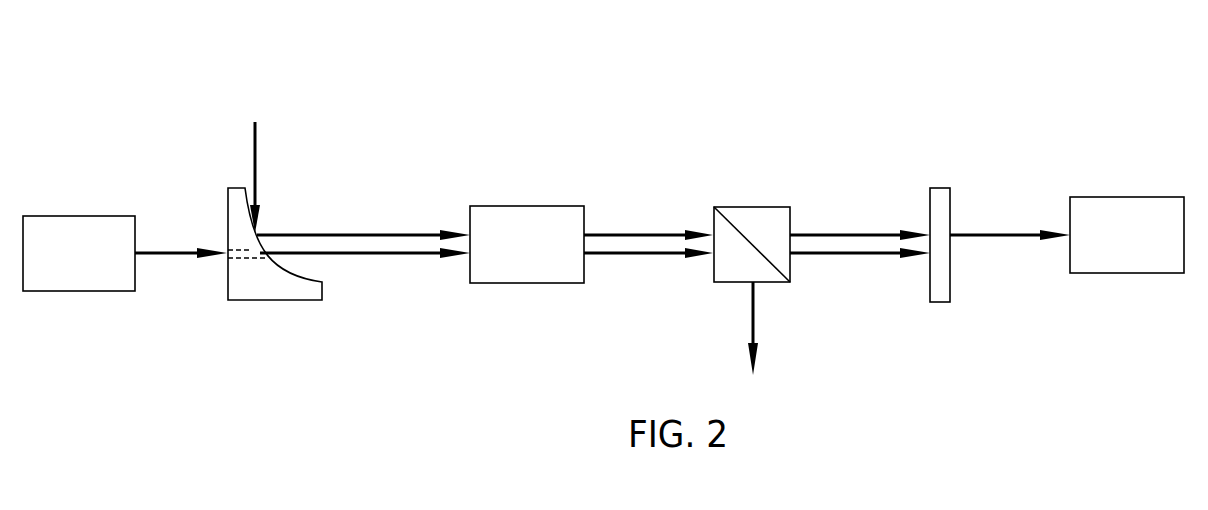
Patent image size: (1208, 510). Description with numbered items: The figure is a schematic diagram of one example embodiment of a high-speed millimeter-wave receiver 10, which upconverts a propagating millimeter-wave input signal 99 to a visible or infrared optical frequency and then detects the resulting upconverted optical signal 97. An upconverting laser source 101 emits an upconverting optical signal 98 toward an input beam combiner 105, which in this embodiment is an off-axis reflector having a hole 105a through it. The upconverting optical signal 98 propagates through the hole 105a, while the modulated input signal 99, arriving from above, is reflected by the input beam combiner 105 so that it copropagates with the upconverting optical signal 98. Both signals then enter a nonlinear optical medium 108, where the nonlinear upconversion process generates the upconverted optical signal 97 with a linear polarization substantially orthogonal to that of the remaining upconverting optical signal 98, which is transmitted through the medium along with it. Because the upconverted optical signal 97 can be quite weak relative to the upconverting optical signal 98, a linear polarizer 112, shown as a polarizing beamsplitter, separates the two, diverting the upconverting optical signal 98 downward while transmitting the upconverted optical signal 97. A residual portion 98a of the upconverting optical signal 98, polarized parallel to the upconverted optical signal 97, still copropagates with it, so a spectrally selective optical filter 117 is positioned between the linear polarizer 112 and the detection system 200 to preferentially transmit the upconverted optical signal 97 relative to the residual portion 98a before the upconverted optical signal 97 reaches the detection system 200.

The receiver 10 is at (404, 102).
The upconverting laser source 101 is at (101, 267).
The upconverting optical signal 98 is at (172, 257).
The input signal 99 is at (255, 143).
The input beam combiner 105 is at (263, 288).
The hole 105a is at (258, 257).
The nonlinear optical medium 108 is at (551, 260).
The upconverted optical signal 97 is at (640, 232).
The residual portion of the upconverting optical signal 98a is at (845, 257).
The linear polarizer 112 is at (760, 212).
The spectrally selective optical filter 117 is at (942, 280).
The detection system 200 is at (1150, 252).